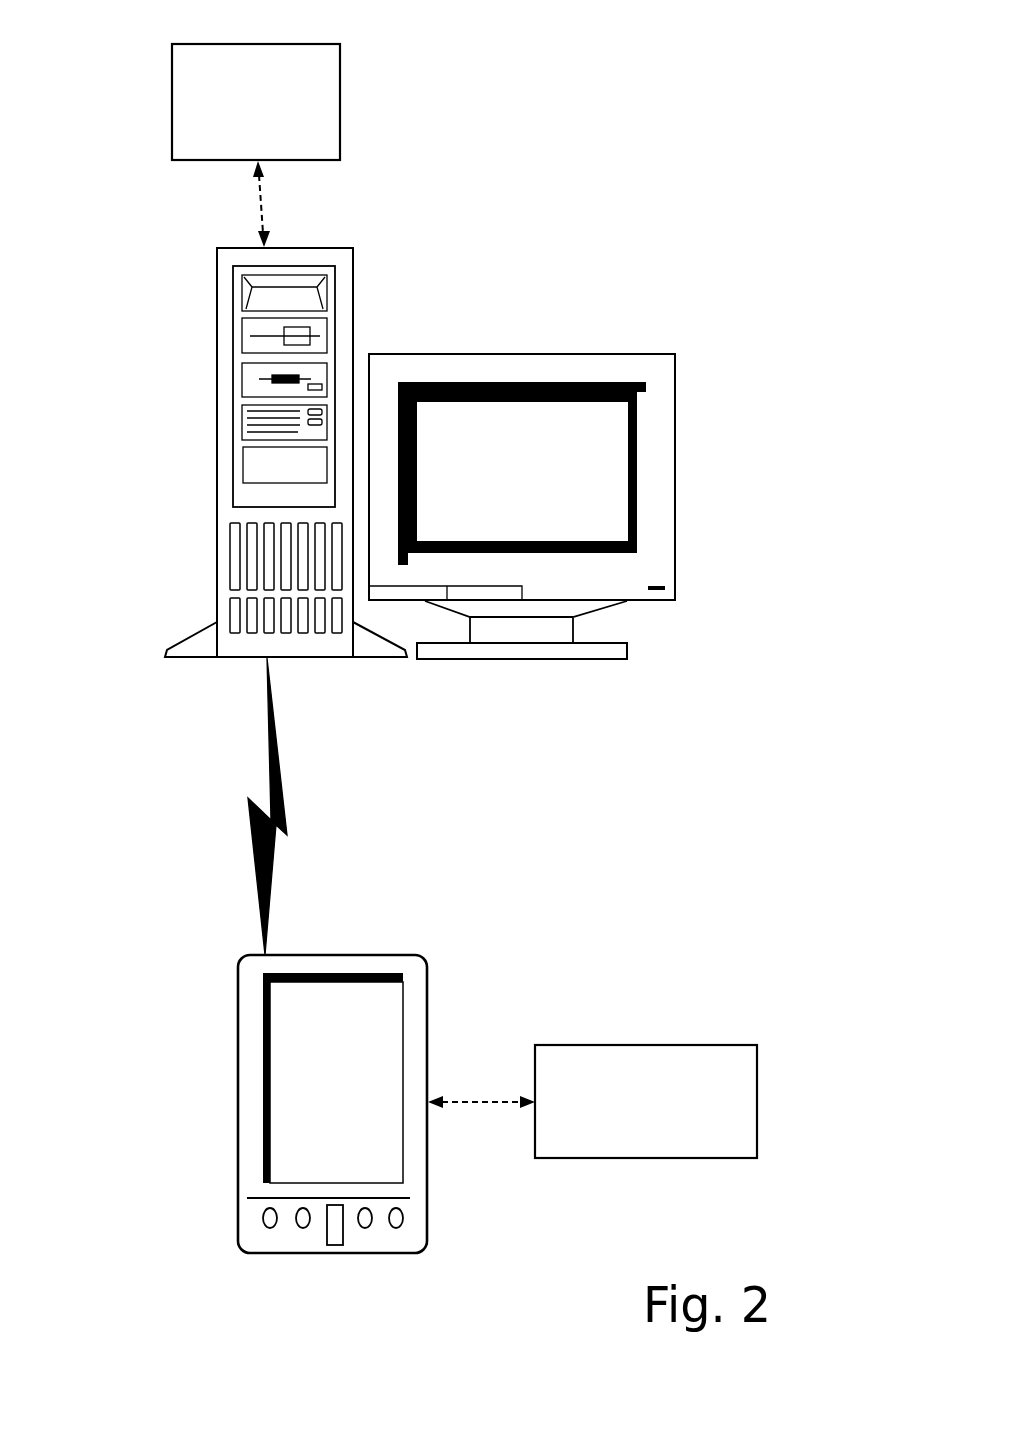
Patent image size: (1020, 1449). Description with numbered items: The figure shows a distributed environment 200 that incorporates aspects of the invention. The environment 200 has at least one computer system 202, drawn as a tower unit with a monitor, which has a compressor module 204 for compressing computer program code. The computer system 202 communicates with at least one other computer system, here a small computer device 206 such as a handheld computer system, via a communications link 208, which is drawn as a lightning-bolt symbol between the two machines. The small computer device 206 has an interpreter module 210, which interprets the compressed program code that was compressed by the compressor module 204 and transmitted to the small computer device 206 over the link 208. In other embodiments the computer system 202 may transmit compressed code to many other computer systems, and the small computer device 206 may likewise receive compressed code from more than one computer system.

The distributed environment 200 is at (681, 116).
The computer system 202 is at (522, 353).
The compressor module 204 is at (248, 44).
The small computer device 206 is at (263, 1133).
The communications link 208 is at (247, 808).
The interpreter module 210 is at (647, 1045).